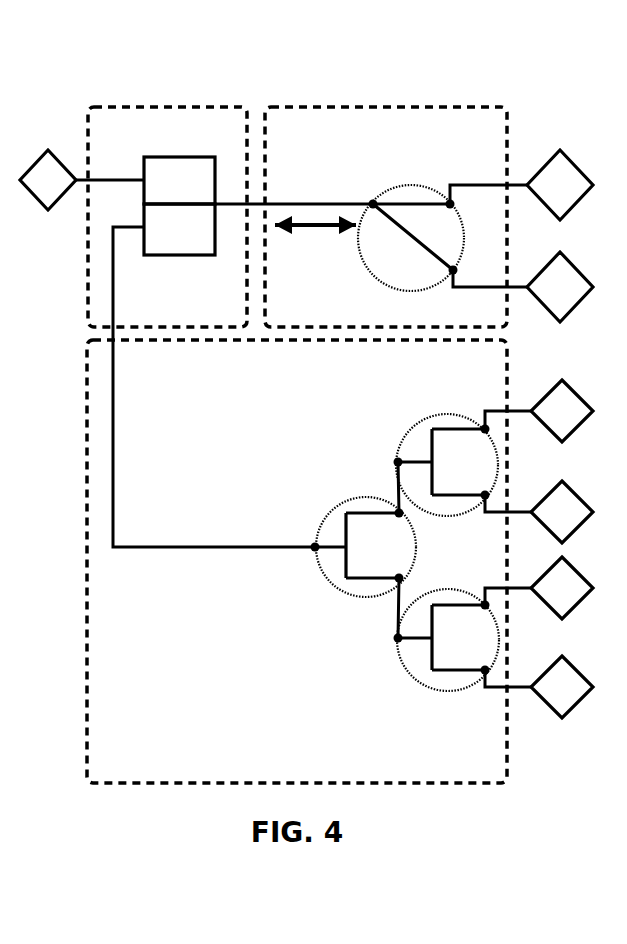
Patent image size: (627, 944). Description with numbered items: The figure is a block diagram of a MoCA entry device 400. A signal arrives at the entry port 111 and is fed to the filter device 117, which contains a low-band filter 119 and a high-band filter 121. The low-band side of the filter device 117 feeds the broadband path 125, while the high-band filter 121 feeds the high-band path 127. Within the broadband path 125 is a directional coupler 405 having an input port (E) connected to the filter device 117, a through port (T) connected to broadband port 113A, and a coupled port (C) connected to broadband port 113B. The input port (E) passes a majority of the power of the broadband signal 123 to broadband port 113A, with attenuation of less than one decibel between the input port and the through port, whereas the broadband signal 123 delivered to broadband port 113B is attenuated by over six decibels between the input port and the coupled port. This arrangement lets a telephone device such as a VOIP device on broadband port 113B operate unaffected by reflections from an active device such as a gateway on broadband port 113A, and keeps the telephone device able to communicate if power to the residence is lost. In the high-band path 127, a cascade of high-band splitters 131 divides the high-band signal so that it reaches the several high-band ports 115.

The MoCA entry device 400 is at (500, 80).
The entry port 111 is at (48, 180).
The broadband port 113A is at (560, 185).
The broadband port 113B is at (560, 287).
The high-band ports 115 is at (562, 549).
The filter device 117 is at (167, 217).
The low-band filter 119 is at (179, 180).
The high-band filter 121 is at (179, 229).
The broadband signal 123 is at (330, 233).
The broadband path 125 is at (386, 217).
The high-band path 127 is at (297, 561).
The high-band splitter 131 is at (423, 420).
The directional coupler 405 is at (395, 188).